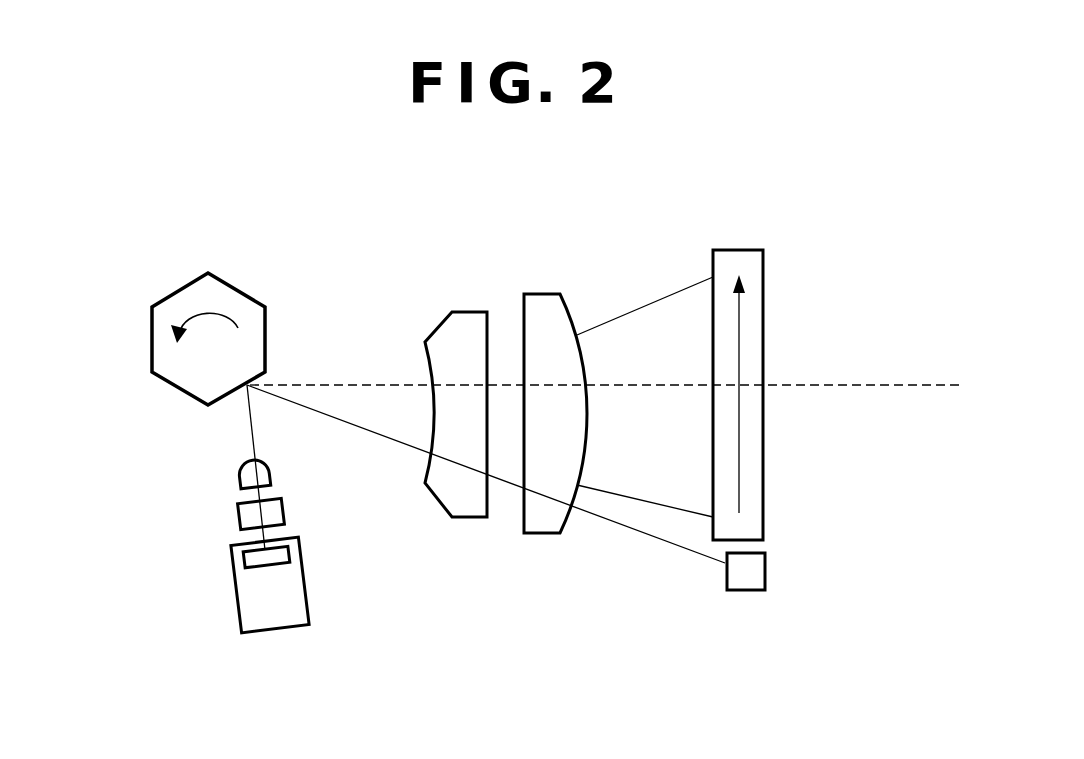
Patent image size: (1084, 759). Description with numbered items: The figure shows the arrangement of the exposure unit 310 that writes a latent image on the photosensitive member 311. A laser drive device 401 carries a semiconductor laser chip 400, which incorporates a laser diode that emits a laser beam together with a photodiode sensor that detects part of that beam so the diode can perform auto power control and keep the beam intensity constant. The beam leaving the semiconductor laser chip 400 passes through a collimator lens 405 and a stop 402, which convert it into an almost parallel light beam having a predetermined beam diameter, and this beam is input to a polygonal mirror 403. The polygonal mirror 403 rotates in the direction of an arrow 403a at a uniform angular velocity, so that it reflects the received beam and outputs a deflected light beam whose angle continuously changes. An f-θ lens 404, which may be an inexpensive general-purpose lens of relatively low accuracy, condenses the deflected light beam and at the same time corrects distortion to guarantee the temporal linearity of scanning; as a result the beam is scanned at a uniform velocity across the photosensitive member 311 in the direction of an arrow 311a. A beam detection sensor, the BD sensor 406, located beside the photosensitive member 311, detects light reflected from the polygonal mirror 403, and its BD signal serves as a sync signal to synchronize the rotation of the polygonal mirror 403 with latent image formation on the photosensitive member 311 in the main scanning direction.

The image forming unit / optical scanning unit 310 is at (556, 693).
The photosensitive member 311 is at (750, 249).
The arrow 311a is at (740, 428).
The semiconductor laser chip 400 is at (300, 553).
The laser drive device 401 is at (238, 590).
The stop 402 is at (240, 470).
The polygonal mirror 403 is at (152, 334).
The arrow 403a is at (222, 307).
The f-θ lens 404 is at (583, 288).
The collimator lens 405 is at (238, 518).
The BD sensor 406 is at (767, 570).